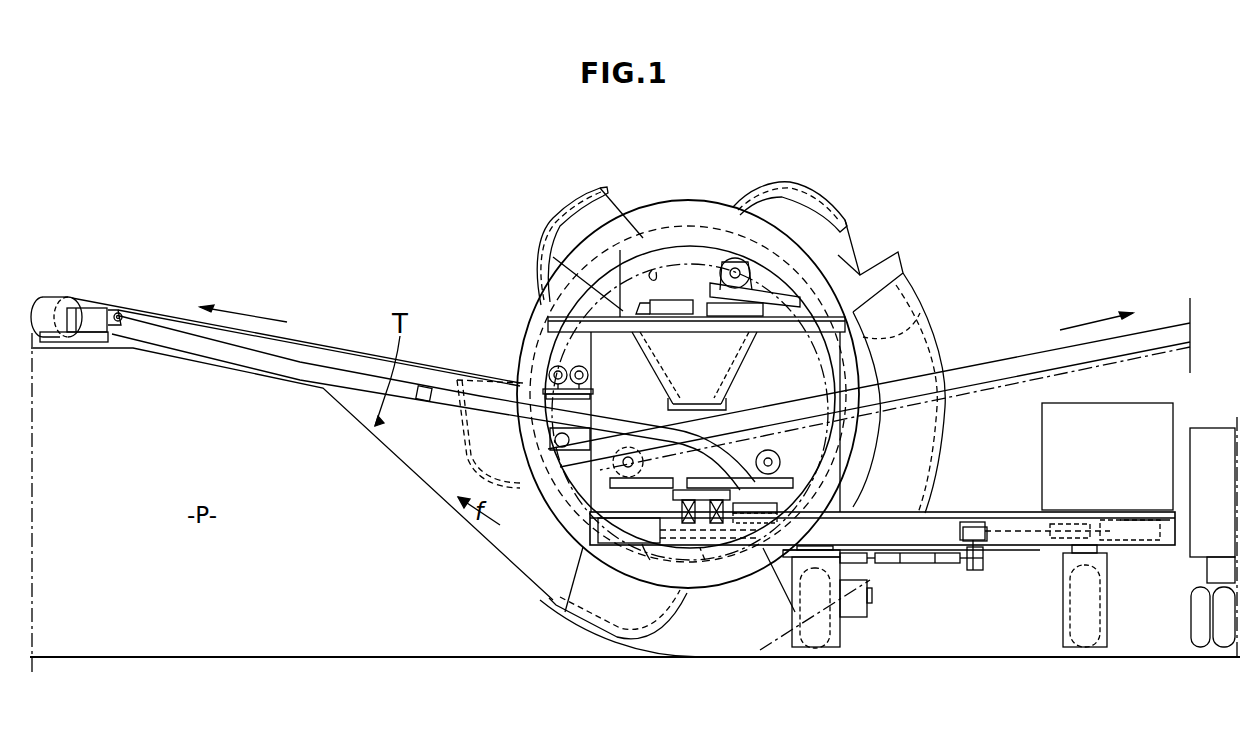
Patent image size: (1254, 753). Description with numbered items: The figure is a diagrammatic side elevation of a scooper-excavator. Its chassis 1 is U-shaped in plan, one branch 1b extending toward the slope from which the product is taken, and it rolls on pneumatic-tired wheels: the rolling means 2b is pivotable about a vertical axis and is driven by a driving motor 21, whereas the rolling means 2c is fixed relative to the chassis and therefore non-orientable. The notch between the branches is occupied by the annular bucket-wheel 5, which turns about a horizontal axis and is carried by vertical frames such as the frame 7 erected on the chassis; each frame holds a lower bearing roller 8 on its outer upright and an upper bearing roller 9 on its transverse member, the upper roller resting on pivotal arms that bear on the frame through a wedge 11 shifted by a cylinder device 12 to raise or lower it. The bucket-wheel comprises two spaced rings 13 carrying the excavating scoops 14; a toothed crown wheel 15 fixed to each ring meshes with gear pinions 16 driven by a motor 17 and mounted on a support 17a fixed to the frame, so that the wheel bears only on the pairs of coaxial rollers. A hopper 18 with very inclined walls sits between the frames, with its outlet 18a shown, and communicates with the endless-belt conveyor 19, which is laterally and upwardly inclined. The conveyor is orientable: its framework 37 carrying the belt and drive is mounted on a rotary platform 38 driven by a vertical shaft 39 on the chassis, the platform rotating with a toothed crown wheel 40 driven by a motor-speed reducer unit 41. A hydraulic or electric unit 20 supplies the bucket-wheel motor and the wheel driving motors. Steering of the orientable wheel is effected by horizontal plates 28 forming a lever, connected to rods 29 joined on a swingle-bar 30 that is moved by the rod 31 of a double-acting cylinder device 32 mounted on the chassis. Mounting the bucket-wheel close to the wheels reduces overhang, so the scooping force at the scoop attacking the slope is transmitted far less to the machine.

The chassis 1 is at (956, 506).
The branch of the chassis 1b is at (626, 530).
The rolling support means 2b is at (846, 635).
The rolling support means 2c is at (1110, 628).
The bucket-wheel 5 is at (528, 336).
The vertical support frame 7 is at (593, 376).
The lower bearing roller 8 is at (556, 500).
The upper bearing roller 9 is at (719, 264).
The wedge 11 is at (730, 318).
The cylinder device 12 is at (664, 294).
The ring 13 is at (752, 570).
The excavating scoop 14 is at (830, 192).
The toothed crown wheel 15 is at (653, 270).
The gear pinion 16 is at (546, 366).
The motor 17 is at (588, 366).
The support 17a is at (593, 392).
The hopper 18 is at (750, 346).
The hopper outlet 18a is at (724, 410).
The conveyor 19 is at (355, 346).
The hydraulic or electric unit 20 is at (762, 290).
The driving motor 21 is at (866, 614).
The horizontal plate 28 is at (846, 551).
The rod 29 is at (912, 566).
The swingle-bar 30 is at (982, 566).
The rod of the double-acting cylinder device 31 is at (1017, 524).
The double-acting cylinder device 32 is at (1140, 544).
The framework 37 is at (442, 396).
The rotary platform 38 is at (678, 503).
The shaft 39 is at (703, 568).
The toothed crown wheel 40 is at (654, 560).
The motor-speed reducer unit 41 is at (782, 506).